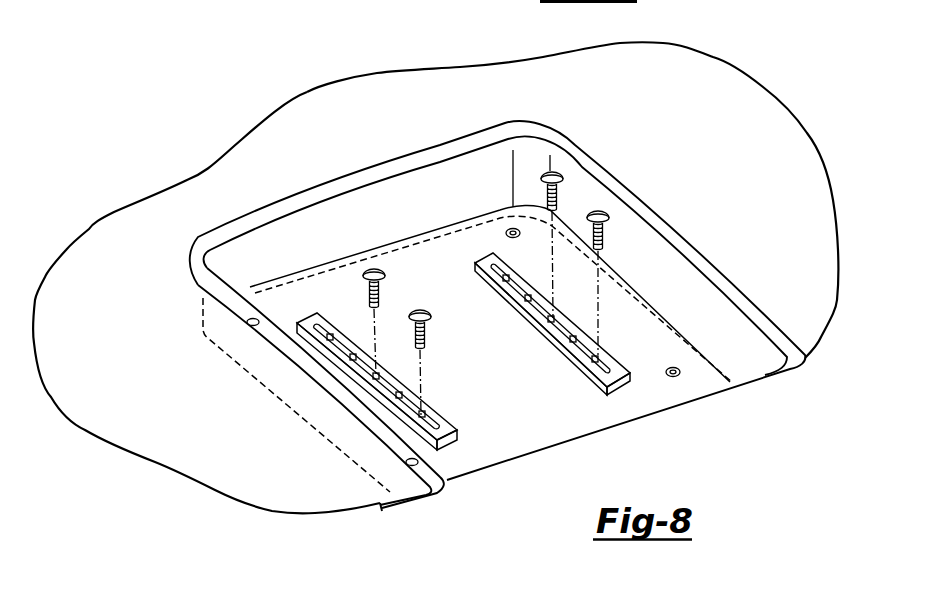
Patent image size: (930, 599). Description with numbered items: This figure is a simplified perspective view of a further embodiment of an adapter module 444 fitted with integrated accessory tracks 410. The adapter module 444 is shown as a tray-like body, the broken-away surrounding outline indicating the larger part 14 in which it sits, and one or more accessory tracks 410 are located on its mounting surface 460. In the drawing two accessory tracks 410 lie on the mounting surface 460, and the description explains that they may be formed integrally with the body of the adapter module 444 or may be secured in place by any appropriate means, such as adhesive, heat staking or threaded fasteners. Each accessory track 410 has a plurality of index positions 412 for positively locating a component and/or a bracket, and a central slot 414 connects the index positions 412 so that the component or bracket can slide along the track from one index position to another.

The vehicle body panel 14 is at (710, 70).
The adapter module 444 is at (614, 172).
The mounting surface 460 is at (524, 388).
The accessory tracks 410 is at (298, 322).
The index positions 412 is at (363, 380).
The central slot 414 is at (372, 376).